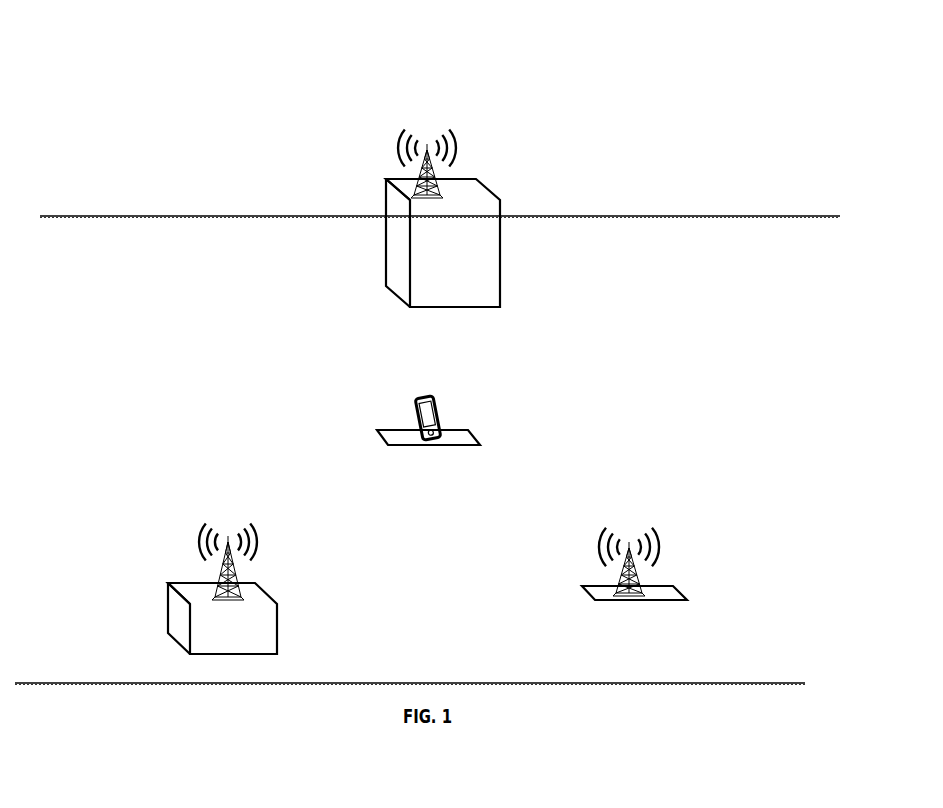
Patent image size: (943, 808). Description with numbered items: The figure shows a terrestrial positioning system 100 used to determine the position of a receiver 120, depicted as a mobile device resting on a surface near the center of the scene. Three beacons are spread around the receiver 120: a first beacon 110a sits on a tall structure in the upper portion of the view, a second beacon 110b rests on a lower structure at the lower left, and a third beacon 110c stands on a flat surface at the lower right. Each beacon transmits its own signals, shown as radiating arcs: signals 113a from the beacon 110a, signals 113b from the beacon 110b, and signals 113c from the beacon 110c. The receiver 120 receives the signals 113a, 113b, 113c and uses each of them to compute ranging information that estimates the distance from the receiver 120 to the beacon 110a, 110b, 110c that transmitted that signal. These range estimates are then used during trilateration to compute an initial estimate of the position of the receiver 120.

The terrestrial positioning system 100 is at (58, 70).
The beacon 110a is at (442, 177).
The signals 113a is at (401, 136).
The receiver 120 is at (437, 402).
The beacon 110b is at (217, 582).
The signals 113b is at (199, 537).
The beacon 110c is at (638, 578).
The signals 113c is at (652, 526).